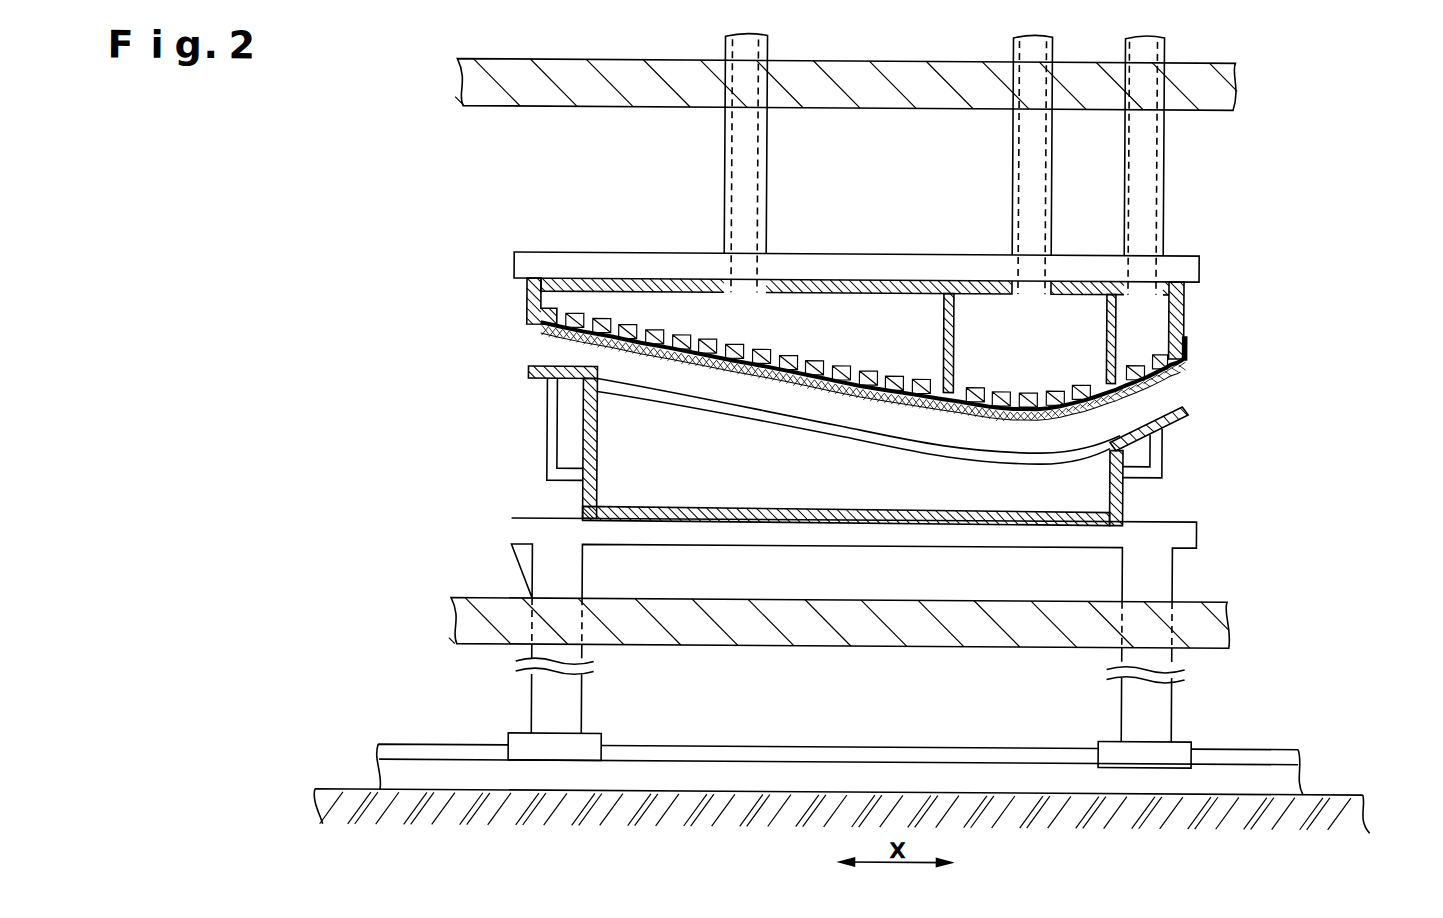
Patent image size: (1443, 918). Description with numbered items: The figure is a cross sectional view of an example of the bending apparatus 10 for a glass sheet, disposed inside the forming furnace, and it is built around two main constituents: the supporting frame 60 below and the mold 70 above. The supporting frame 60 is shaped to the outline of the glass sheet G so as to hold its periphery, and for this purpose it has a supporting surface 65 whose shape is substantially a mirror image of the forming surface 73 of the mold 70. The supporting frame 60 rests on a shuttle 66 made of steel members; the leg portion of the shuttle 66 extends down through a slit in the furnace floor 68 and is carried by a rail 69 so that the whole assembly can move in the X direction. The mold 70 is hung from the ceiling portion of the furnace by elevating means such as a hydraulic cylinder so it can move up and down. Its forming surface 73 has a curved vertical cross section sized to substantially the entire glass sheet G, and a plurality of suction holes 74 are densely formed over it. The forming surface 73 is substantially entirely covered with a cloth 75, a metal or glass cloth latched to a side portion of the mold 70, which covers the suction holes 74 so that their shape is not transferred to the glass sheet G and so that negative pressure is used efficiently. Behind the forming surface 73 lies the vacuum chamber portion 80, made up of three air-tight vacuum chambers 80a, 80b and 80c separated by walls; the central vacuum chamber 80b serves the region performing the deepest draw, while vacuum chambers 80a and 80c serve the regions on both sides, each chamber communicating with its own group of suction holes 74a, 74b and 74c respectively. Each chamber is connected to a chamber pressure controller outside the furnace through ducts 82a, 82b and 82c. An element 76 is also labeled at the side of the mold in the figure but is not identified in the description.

The bending apparatus 10 is at (304, 69).
The duct 82a is at (723, 141).
The duct 82b is at (1011, 144).
The duct 82c is at (1162, 146).
The vacuum chamber portion 80 is at (1115, 217).
The vacuum chamber 80a is at (862, 312).
The vacuum chamber 80b is at (980, 313).
The vacuum chamber 80c is at (1125, 307).
The side wall 76 is at (527, 304).
The mold 70 is at (1188, 313).
The cloth 75 is at (1183, 352).
The glass sheet G is at (1173, 373).
The forming surface 73 is at (822, 393).
The suction holes 74 is at (875, 333).
The suction holes 74a is at (909, 388).
The suction holes 74b is at (1070, 395).
The suction holes 74c is at (1152, 373).
The supporting frame 60 is at (1187, 410).
The supporting surface 65 is at (855, 431).
The shuttle 66 is at (1175, 572).
The furnace floor 68 is at (1211, 623).
The rail 69 is at (1292, 790).